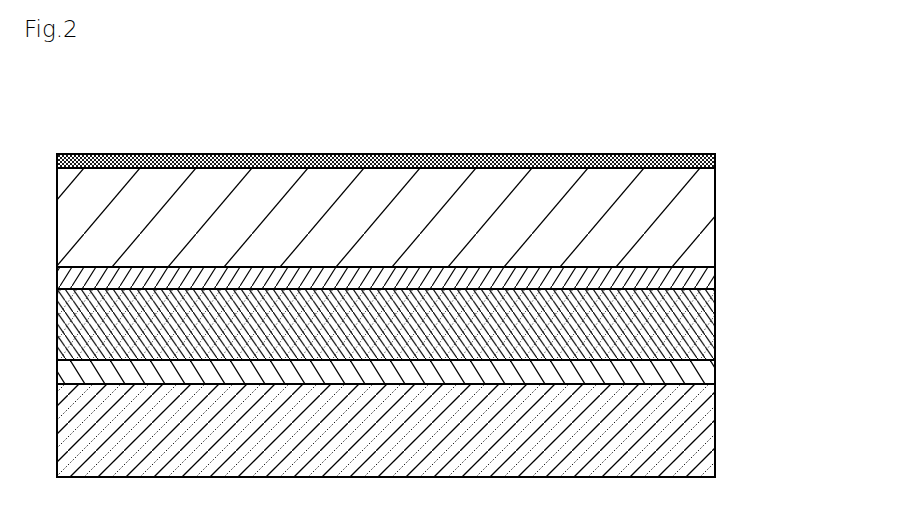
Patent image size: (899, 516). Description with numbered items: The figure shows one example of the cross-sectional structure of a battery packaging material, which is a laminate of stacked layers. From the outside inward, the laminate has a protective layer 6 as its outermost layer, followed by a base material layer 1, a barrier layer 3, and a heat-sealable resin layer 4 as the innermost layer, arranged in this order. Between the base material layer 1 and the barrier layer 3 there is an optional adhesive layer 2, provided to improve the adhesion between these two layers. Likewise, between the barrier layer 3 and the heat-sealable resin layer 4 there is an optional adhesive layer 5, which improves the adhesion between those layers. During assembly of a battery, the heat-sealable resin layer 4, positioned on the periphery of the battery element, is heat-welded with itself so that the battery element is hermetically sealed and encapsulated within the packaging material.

The base material layer 1 is at (715, 218).
The adhesive layer 2 is at (715, 280).
The barrier layer 3 is at (715, 335).
The heat-sealable resin layer 4 is at (715, 427).
The adhesive layer 5 is at (715, 377).
The protective layer 6 is at (717, 153).